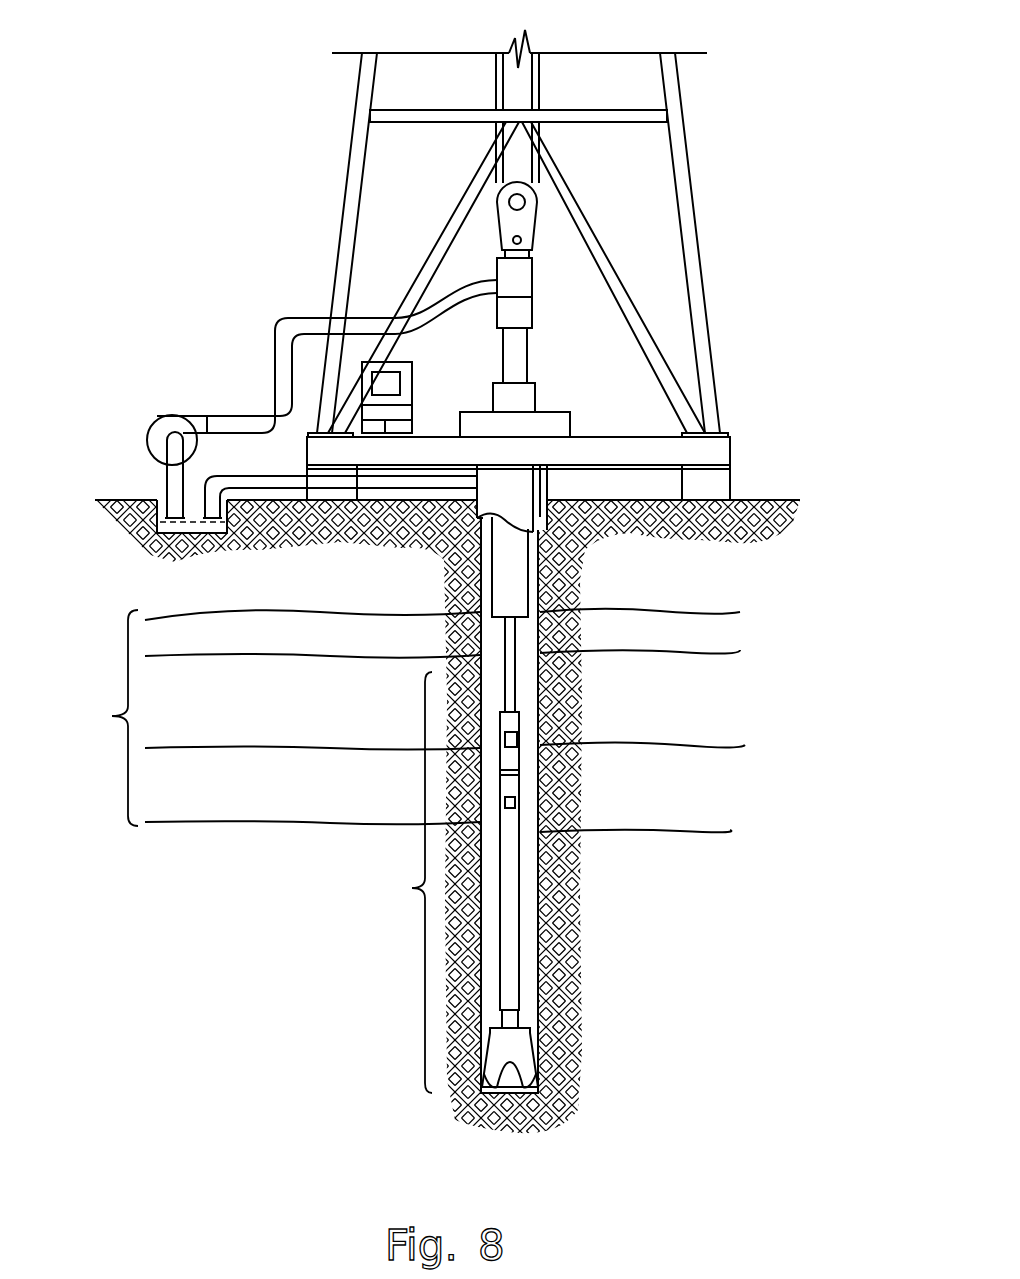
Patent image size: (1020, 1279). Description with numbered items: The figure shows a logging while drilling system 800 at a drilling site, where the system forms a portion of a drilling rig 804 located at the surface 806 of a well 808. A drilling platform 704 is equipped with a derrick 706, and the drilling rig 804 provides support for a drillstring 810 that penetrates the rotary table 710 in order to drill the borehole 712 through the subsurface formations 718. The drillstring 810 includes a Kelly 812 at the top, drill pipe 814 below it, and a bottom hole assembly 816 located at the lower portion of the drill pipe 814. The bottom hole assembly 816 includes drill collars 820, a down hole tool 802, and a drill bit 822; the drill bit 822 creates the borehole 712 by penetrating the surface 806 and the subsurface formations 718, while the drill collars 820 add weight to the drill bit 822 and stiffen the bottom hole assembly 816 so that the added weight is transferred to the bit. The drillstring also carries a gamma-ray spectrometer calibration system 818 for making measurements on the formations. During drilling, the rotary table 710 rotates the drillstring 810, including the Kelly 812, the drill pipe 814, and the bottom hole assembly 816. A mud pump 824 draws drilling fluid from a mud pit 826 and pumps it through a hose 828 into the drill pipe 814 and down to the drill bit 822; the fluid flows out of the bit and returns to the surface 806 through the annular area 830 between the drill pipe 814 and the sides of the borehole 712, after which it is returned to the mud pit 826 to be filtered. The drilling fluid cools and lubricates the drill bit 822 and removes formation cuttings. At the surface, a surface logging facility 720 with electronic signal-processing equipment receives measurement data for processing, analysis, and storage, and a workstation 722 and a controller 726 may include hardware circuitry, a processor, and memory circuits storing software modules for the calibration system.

The logging while drilling system 800 is at (229, 139).
The derrick 706 is at (686, 140).
The drilling rig 804 is at (708, 230).
The Kelly 812 is at (527, 352).
The rotary table 710 is at (476, 412).
The drilling platform 704 is at (730, 437).
The surface logging facility 720 is at (403, 356).
The workstation 722 is at (412, 376).
The controller 726 is at (400, 384).
The hose 828 is at (285, 320).
The mud pump 824 is at (183, 416).
The mud pit 826 is at (177, 530).
The surface 806 is at (752, 500).
The well 808 is at (550, 495).
The drillstring 810 is at (526, 887).
The annular area 830 is at (530, 717).
The drill collars 820 is at (528, 577).
The drill pipe 814 is at (510, 652).
The bottom hole assembly 816 is at (438, 882).
The gamma-ray spectrometer calibration system 818 is at (515, 805).
The borehole 712 is at (540, 963).
The down hole tool 802 is at (510, 992).
The drill bit 822 is at (518, 1050).
The subsurface formations 718 is at (401, 721).